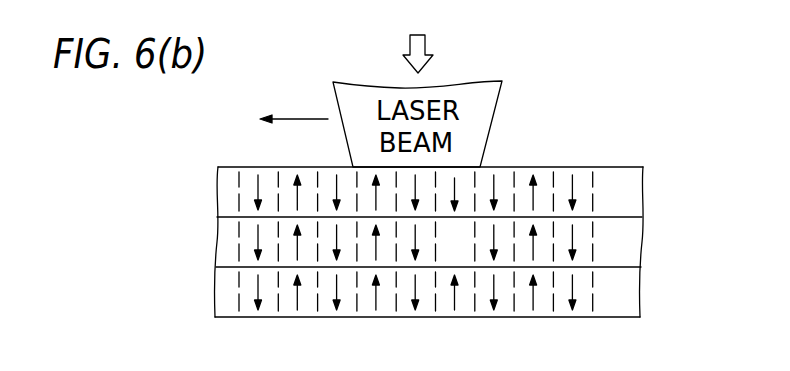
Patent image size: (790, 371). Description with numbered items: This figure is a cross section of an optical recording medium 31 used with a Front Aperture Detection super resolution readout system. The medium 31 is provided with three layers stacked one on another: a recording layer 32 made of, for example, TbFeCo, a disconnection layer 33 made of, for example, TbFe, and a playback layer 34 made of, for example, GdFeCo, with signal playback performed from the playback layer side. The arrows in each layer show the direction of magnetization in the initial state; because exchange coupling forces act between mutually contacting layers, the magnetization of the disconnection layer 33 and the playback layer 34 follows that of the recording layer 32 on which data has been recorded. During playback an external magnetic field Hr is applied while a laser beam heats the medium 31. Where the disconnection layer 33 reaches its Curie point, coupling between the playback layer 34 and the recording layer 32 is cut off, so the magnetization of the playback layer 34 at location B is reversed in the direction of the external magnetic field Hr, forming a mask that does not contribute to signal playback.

The medium 31 is at (598, 167).
The recording layer 32 is at (633, 298).
The disconnection layer 33 is at (633, 245).
The playback layer 34 is at (465, 169).
The location B is at (465, 192).
The external magnetic field Hr is at (439, 54).